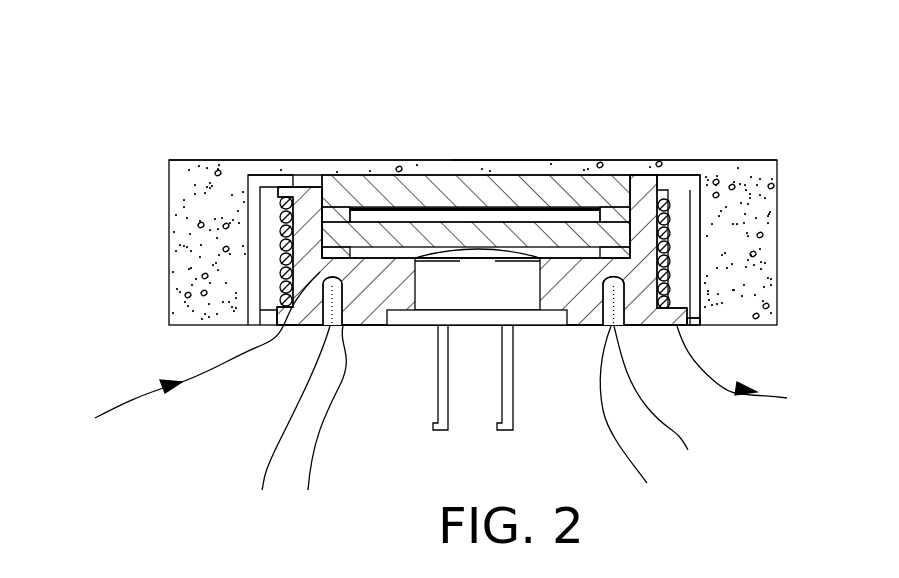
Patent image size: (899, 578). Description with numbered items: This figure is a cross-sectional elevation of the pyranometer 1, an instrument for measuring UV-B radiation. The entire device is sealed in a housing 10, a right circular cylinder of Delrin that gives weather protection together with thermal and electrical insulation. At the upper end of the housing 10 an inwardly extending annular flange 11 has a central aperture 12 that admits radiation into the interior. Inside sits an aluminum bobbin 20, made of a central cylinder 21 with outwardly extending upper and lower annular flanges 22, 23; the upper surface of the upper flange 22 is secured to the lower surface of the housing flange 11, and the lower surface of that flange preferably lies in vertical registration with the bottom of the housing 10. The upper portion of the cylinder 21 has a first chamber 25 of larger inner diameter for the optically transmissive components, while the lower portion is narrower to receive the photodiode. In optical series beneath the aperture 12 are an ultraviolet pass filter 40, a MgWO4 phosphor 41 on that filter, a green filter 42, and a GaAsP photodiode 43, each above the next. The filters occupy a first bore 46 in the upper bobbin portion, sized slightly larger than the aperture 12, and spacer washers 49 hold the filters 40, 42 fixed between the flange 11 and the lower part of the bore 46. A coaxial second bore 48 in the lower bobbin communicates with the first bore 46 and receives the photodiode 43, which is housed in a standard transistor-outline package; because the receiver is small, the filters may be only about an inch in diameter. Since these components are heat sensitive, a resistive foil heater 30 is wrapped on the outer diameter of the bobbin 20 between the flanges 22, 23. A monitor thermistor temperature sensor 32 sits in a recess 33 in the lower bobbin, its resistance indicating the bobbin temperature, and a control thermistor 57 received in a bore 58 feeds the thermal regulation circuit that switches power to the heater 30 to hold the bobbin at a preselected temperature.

The pyranometer 1 is at (748, 39).
The housing 10 is at (778, 222).
The annular flange 11 is at (667, 161).
The central aperture 12 is at (505, 160).
The bobbin 20 is at (658, 198).
The central cylinder 21 is at (668, 247).
The upper annular flange 22 is at (710, 165).
The lower annular flange 23 is at (703, 326).
The first chamber 25 is at (578, 165).
The heater 30 is at (272, 200).
The temperature sensor 32 is at (350, 360).
The recess 33 is at (355, 328).
The ultraviolet pass filter 40 is at (441, 178).
The MgWO4 phosphor 41 is at (397, 208).
The green filter 42 is at (568, 247).
The GaAsP photodiode 43 is at (487, 327).
The first bore 46 is at (342, 205).
The second bore 48 is at (527, 300).
The spacer washers 49 is at (306, 300).
The control thermistor 57 is at (660, 412).
The bore 58 is at (636, 326).